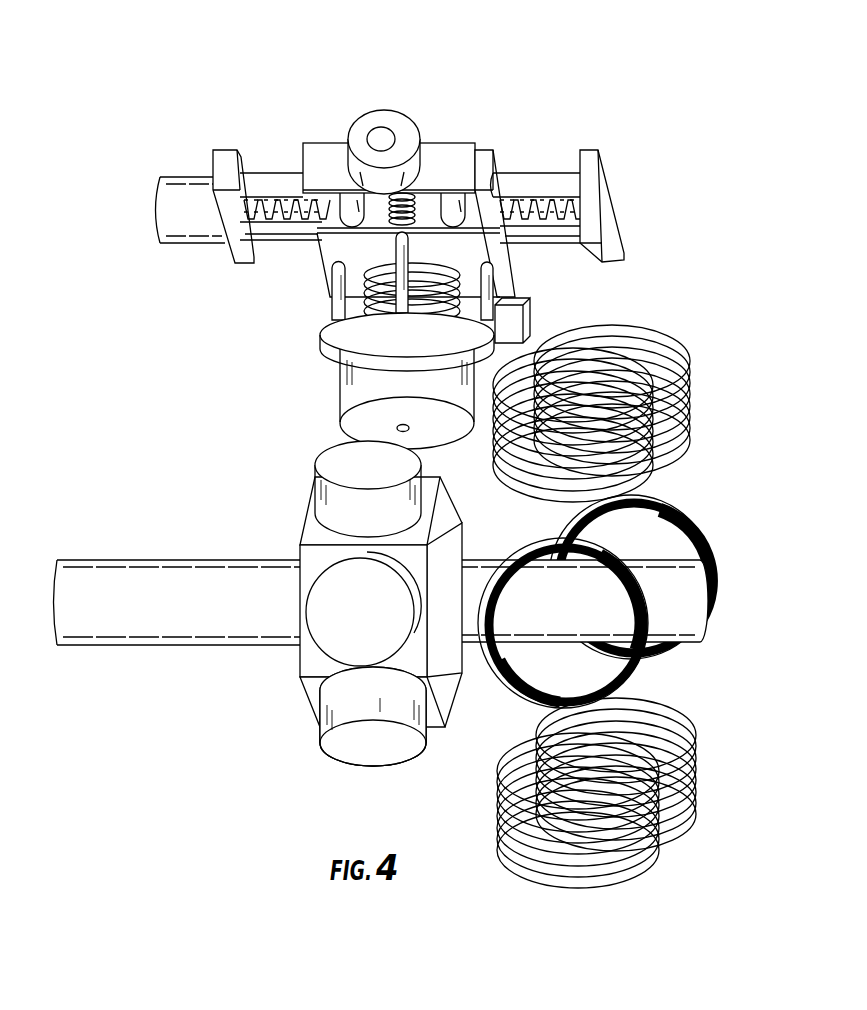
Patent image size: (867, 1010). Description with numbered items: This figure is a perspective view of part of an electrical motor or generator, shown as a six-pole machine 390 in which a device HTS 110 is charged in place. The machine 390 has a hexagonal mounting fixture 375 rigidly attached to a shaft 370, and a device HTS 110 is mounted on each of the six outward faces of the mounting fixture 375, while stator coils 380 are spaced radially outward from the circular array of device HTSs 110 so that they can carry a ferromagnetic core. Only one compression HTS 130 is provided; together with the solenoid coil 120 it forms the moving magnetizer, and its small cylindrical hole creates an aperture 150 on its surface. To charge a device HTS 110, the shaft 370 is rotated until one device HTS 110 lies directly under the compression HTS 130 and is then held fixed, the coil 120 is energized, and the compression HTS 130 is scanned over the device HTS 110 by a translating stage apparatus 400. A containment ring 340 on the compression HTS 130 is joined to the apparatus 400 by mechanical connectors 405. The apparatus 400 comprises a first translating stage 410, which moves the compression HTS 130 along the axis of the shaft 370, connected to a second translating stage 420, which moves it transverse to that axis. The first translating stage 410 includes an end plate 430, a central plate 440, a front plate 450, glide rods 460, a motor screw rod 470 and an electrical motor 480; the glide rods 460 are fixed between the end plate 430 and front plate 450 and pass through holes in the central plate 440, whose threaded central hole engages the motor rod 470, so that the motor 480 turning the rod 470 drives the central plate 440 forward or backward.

The 6-pole machine 390 is at (126, 55).
The translating stage apparatus 400 is at (184, 128).
The electrical motor 480 is at (177, 183).
The front plate 450 is at (225, 162).
The motor screw rod 470 is at (300, 220).
The first translating stage 410 is at (225, 250).
The second translating stage 420 is at (445, 140).
The central plate 440 is at (490, 148).
The glide rods 460 is at (527, 175).
The end plate 430 is at (607, 172).
The mechanical connectors 405 is at (327, 293).
The solenoid coil 120 is at (470, 293).
The containment ring 340 is at (327, 343).
The compression HTS 130 is at (345, 385).
The aperture 150 is at (400, 429).
The stator coils 380 is at (681, 366).
The shaft 370 is at (93, 568).
The hexagonal mounting fixture 375 is at (300, 545).
The device HTS 110 is at (330, 468).